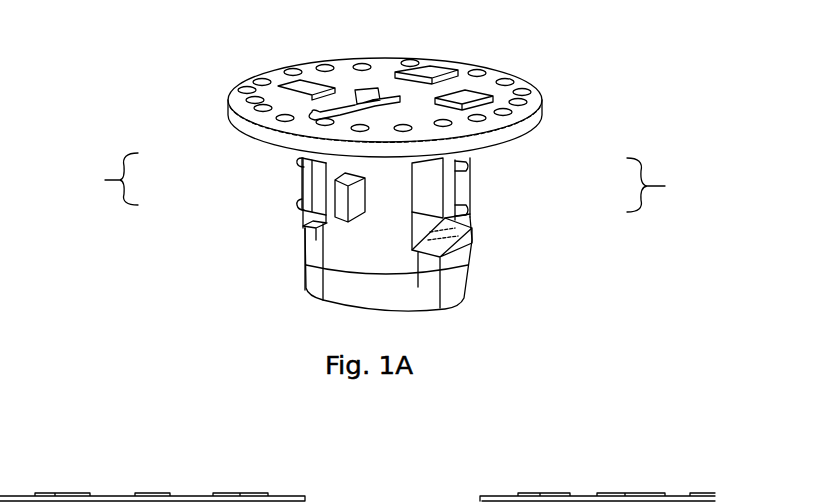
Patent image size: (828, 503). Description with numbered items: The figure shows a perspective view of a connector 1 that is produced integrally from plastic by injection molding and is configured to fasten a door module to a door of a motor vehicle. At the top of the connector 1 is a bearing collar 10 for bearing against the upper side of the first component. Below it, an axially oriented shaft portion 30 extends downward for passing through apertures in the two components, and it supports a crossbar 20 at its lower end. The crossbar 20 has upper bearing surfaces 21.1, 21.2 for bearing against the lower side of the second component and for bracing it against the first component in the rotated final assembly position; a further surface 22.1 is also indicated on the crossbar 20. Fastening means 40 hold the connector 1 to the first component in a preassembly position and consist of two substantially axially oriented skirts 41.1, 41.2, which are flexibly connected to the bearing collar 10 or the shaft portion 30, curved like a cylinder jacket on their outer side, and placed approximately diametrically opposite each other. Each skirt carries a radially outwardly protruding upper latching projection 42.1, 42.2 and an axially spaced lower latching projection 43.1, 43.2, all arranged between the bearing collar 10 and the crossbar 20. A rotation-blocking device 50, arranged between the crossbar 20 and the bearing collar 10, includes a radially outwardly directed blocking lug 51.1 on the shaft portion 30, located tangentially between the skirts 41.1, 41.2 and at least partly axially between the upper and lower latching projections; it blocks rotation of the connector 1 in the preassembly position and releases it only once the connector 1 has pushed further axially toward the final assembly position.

The connector 1 is at (573, 43).
The bearing collar 10 is at (502, 135).
The crossbar 20 is at (450, 269).
The upper bearing surface 21.1 is at (453, 223).
The upper bearing surface 21.2 is at (316, 225).
The support surface 22.1 is at (435, 242).
The shaft portion 30 is at (372, 172).
The fastening means 40 is at (382, 182).
The skirt 41.1 is at (462, 188).
The skirt 41.2 is at (305, 181).
The upper latching projection 42.1 is at (473, 161).
The upper latching projection 42.2 is at (298, 156).
The lower latching projection 43.1 is at (473, 206).
The lower latching projection 43.2 is at (298, 202).
The rotation-blocking device 50 is at (230, 332).
The blocking lug 51.1 is at (345, 205).